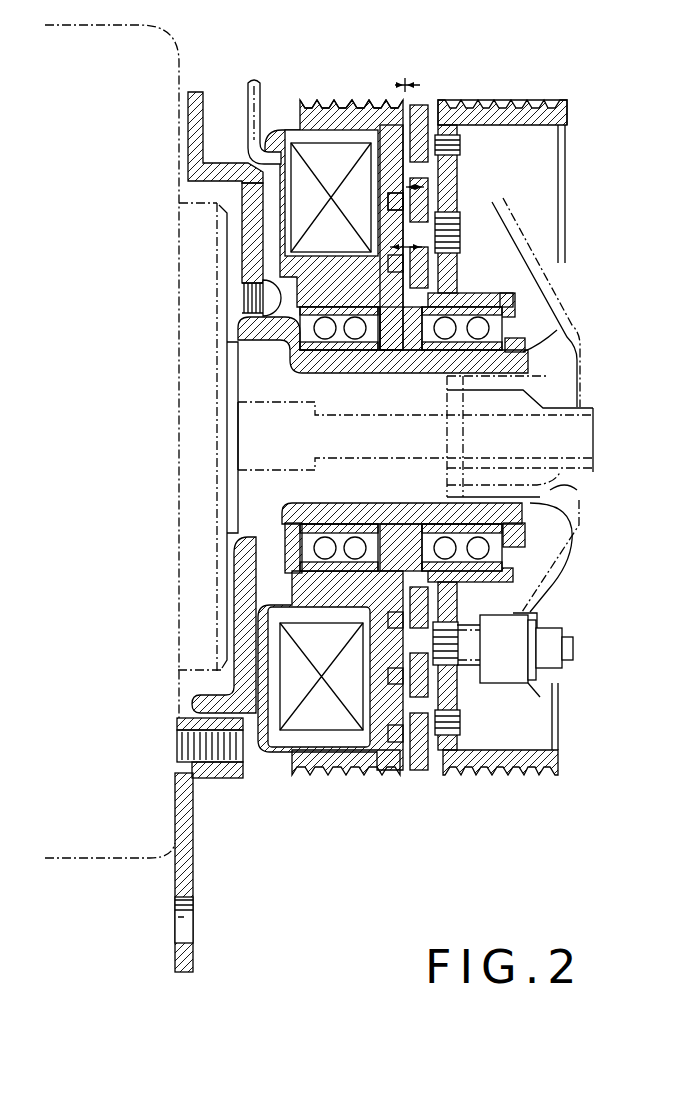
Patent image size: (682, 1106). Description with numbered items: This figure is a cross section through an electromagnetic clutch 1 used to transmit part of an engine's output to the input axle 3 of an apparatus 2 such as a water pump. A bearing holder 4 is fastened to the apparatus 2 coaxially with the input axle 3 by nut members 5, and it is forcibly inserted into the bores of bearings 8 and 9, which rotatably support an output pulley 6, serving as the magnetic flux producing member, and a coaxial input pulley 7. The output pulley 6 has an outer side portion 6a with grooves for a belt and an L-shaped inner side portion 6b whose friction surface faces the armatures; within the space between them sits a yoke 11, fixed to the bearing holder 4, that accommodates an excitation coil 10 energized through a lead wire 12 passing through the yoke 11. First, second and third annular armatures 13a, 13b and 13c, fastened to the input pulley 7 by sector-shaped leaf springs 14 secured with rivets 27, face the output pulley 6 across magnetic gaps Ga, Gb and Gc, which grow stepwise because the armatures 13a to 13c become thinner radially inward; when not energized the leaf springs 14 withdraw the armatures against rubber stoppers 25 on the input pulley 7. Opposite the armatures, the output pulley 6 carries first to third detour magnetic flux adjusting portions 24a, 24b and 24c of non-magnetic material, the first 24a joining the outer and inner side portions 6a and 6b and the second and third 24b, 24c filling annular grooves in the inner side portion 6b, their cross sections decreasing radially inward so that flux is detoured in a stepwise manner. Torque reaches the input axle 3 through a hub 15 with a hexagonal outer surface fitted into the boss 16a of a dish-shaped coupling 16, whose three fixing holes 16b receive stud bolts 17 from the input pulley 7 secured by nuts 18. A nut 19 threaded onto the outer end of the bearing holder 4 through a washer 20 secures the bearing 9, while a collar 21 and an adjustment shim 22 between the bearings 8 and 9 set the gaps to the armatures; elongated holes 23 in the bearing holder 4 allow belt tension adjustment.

The electromagnetic clutch 1 is at (474, 90).
The apparatus 2 is at (184, 64).
The input axle 3 is at (593, 452).
The bearing holder 4 is at (224, 163).
The nut members 5 is at (210, 787).
The output pulley 6 is at (303, 99).
The outer side portion 6a is at (326, 100).
The inner side portion 6b is at (364, 100).
The input pulley 7 is at (562, 100).
The bearing 8 is at (353, 357).
The bearing 9 is at (428, 353).
The excitation coil 10 is at (293, 135).
The yoke 11 is at (242, 190).
The lead wire 12 is at (248, 118).
The first armature 13a is at (428, 102).
The second armature 13b is at (428, 195).
The third armature 13c is at (428, 268).
The leaf spring 14 is at (445, 683).
The hub 15 is at (588, 407).
The dish-shaped coupling 16 is at (565, 562).
The boss 16a is at (580, 495).
The fixing holes 16b is at (538, 697).
The stud bolts 17 is at (575, 645).
The nuts 18 is at (537, 610).
The nut 19 is at (557, 330).
The washer 20 is at (518, 312).
The collar 21 is at (373, 352).
The adjustment shim 22 is at (425, 352).
The elongated holes 23 is at (186, 930).
The first detour magnetic flux adjusting portion 24a is at (391, 192).
The second detour magnetic flux adjusting portion 24b is at (388, 203).
The third detour magnetic flux adjusting portion 24c is at (388, 262).
The stoppers 25 is at (460, 146).
The rivets 27 is at (460, 725).
The magnetic gap Ga is at (410, 82).
The magnetic gap Gb is at (425, 187).
The magnetic gap Gc is at (422, 247).